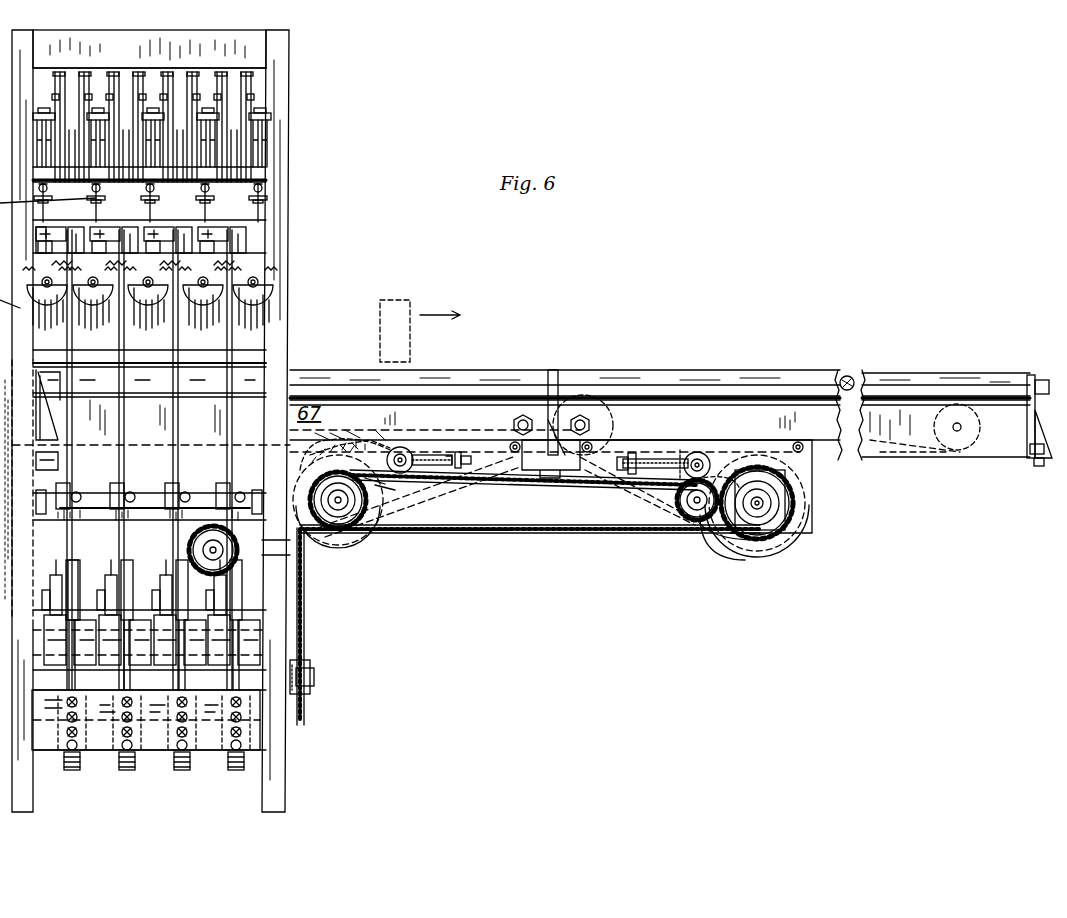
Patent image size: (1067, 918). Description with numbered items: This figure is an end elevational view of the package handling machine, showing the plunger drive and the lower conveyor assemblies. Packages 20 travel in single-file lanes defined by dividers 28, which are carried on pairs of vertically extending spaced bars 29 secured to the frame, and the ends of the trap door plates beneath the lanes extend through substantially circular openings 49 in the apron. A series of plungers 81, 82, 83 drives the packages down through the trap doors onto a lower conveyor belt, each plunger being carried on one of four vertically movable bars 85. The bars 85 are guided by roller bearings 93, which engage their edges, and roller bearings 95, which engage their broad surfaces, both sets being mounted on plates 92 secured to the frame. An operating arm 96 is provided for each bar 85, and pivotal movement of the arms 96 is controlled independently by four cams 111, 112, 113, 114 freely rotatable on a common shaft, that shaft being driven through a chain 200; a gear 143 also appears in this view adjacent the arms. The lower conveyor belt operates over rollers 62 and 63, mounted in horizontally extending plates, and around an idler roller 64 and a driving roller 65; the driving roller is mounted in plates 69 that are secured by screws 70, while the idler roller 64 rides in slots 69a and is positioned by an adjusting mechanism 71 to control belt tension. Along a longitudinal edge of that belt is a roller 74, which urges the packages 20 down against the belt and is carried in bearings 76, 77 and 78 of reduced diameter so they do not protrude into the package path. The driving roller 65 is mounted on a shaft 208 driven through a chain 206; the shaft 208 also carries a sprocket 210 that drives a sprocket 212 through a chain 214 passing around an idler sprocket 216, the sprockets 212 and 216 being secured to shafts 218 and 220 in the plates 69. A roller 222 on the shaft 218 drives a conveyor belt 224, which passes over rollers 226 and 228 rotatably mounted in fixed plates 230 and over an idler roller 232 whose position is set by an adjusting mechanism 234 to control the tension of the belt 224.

The package 20 is at (400, 300).
The divider 28 is at (262, 200).
The vertically extending spaced bar 29 is at (258, 143).
The substantially circular opening 49 is at (262, 310).
The roller 62 is at (62, 412).
The roller 63 is at (512, 422).
The idler roller 64 is at (398, 448).
The driving roller 65 is at (345, 438).
The horizontally extending plate 69 is at (523, 492).
The slot 69a is at (372, 486).
The screw 70 is at (515, 453).
The adjusting mechanism 71 is at (442, 455).
The roller 74 is at (420, 370).
The bearing 76 is at (55, 434).
The bearing 77 is at (552, 370).
The bearing 78 is at (1026, 430).
The plunger 81 is at (248, 106).
The plunger 82 is at (200, 96).
The plunger 83 is at (143, 96).
The vertically extending bar 85 is at (234, 333).
The plate 92 is at (192, 490).
The roller bearing 93 is at (232, 470).
The roller bearing 95 is at (143, 482).
The operating arm 96 is at (82, 560).
The cam 111 is at (236, 770).
The cam 112 is at (182, 770).
The cam 113 is at (127, 770).
The cam 114 is at (72, 770).
The gear 143 is at (112, 540).
The chain 200 is at (310, 638).
The chain 206 is at (305, 560).
The shaft 208 is at (350, 518).
The sprocket 210 is at (338, 512).
The sprocket 212 is at (772, 535).
The chain 214 is at (590, 536).
The idler sprocket 216 is at (690, 518).
The shaft 218 is at (765, 503).
The shaft 220 is at (698, 535).
The roller 222 is at (760, 556).
The conveyor belt 224 is at (740, 565).
The roller 226 is at (600, 400).
The roller 228 is at (965, 450).
The fixed plate 230 is at (694, 471).
The idler roller 232 is at (697, 452).
The adjusting mechanism 234 is at (640, 483).